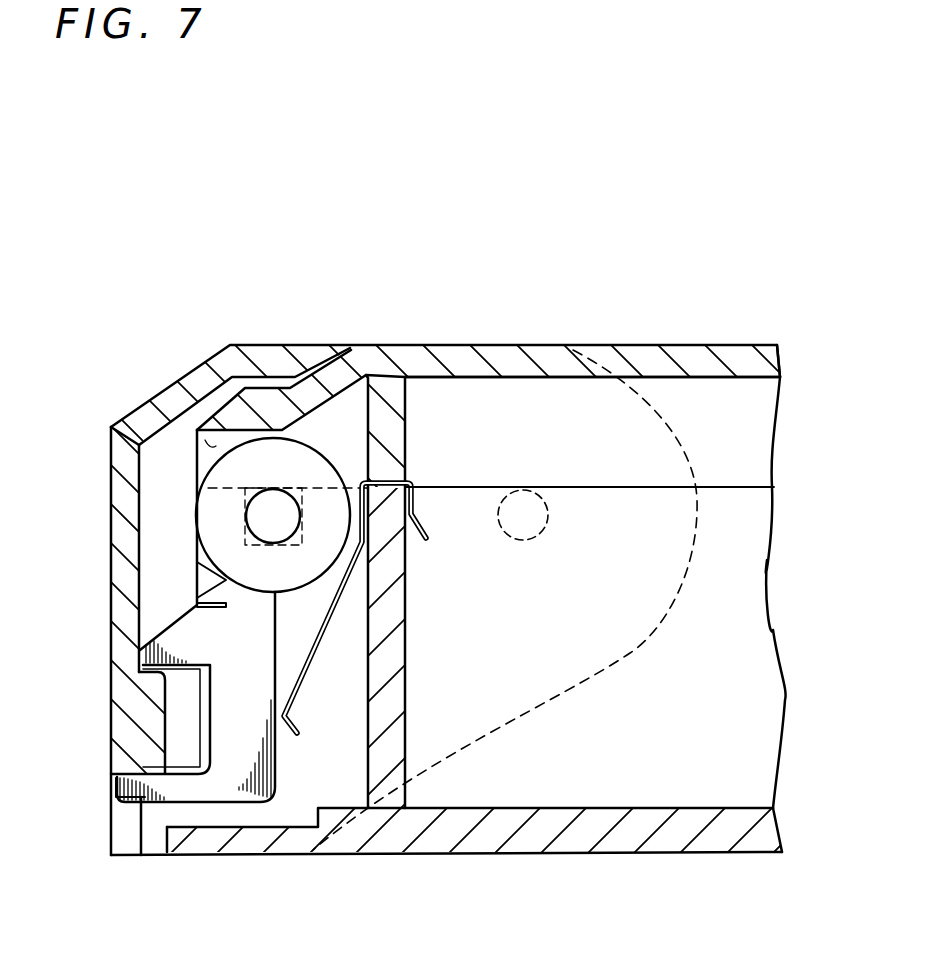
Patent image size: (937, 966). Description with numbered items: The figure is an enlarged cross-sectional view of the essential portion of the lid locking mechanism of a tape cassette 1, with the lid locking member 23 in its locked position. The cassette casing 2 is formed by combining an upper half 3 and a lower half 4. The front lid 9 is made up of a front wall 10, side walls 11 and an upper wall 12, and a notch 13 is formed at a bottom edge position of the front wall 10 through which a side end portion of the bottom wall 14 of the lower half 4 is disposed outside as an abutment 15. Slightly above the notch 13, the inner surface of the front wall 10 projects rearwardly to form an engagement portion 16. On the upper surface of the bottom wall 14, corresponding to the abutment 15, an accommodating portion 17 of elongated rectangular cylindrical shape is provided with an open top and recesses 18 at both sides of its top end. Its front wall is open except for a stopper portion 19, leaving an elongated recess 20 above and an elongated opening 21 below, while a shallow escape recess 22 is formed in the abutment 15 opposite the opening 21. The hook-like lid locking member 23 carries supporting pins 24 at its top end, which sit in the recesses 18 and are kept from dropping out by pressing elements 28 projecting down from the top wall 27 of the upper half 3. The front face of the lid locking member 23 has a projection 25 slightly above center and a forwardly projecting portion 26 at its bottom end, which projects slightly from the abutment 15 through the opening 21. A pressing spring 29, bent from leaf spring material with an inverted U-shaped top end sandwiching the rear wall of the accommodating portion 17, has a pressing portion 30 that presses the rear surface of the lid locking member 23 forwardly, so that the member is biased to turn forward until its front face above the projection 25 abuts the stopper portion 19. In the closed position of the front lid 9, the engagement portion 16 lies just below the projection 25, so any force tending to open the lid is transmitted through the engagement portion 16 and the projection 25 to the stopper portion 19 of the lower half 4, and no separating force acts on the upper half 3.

The tape cassette 1 is at (163, 332).
The cassette casing 2 is at (836, 440).
The upper half 3 is at (780, 353).
The lower half 4 is at (765, 830).
The front lid 9 is at (110, 430).
The front wall 10 is at (112, 525).
The side wall 11 is at (680, 428).
The upper wall 12 is at (289, 358).
The notch 13 is at (116, 772).
The bottom wall 14 is at (648, 812).
The abutment 15 is at (145, 831).
The engagement portion 16 is at (157, 672).
The accommodating portion 17 is at (313, 757).
The recess 18 is at (288, 518).
The stopper portion 19 is at (210, 568).
The elongated recess 20 is at (198, 540).
The elongated opening 21 is at (207, 717).
The escape recess 22 is at (164, 838).
The lid locking member 23 is at (200, 465).
The supporting pin 24 is at (263, 538).
The projection 25 is at (165, 648).
The forwardly projecting portion 26 is at (112, 795).
The top wall 27 is at (535, 347).
The pressing element 28 is at (163, 392).
The pressing spring 29 is at (317, 643).
The pressing portion 30 is at (273, 715).